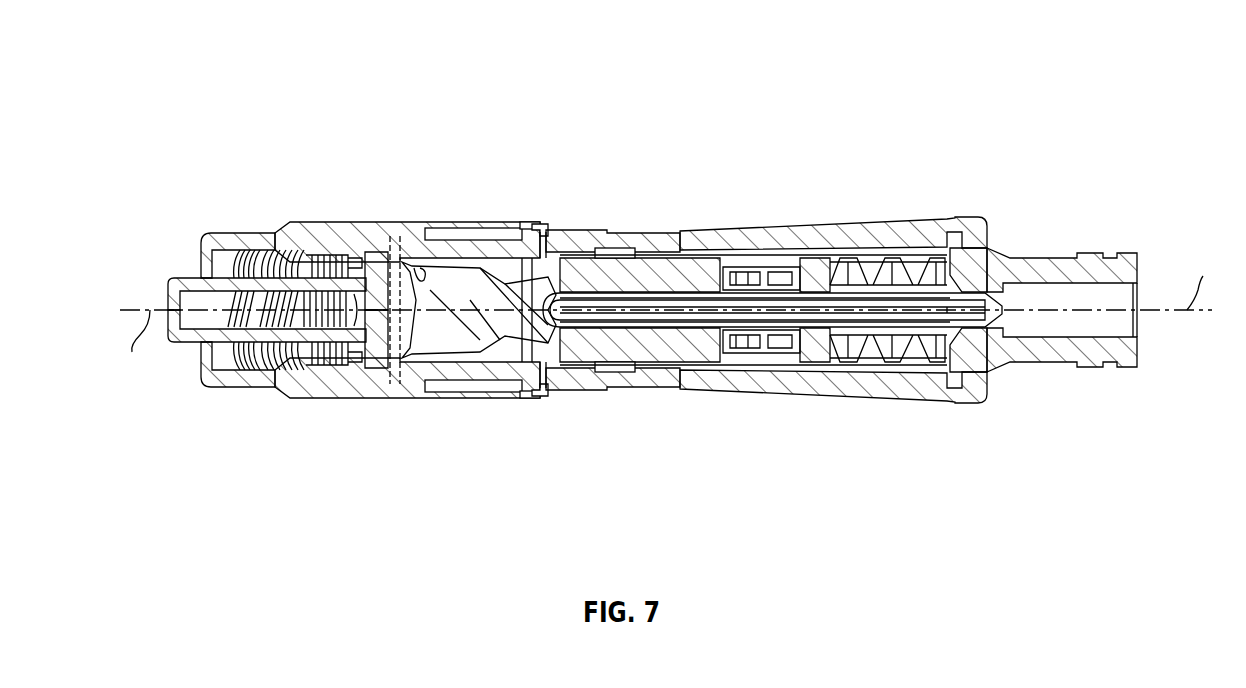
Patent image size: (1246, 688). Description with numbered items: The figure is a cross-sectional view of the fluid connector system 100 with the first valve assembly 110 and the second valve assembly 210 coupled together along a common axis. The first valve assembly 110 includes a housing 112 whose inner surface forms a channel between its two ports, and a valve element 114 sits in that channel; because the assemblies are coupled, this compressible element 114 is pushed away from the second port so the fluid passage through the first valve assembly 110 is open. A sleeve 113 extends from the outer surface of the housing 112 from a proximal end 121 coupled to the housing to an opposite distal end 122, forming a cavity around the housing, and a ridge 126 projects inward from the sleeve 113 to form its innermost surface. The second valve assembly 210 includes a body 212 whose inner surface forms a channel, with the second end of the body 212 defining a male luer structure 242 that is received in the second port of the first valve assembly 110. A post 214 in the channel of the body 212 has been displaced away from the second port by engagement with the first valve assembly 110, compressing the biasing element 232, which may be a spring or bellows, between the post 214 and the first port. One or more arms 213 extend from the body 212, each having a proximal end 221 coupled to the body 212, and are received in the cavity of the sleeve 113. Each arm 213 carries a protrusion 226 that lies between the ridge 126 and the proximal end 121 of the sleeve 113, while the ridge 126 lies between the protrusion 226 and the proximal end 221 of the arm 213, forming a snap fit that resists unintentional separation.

The fluid connector system 100 is at (410, 45).
The first valve assembly 110 is at (362, 130).
The housing 112 is at (343, 398).
The sleeve 113 is at (452, 217).
The valve element 114 is at (420, 325).
The proximal end of the sleeve 121 is at (403, 402).
The distal end of the sleeve 122 is at (538, 420).
The ridge 126 is at (540, 224).
The second valve assembly 210 is at (940, 200).
The body 212 is at (848, 382).
The arm 213 is at (594, 216).
The post 214 is at (775, 382).
The proximal end of the arm 221 is at (603, 402).
The protrusion 226 is at (530, 222).
The biasing element 232 is at (912, 384).
The male luer structure 242 is at (612, 297).